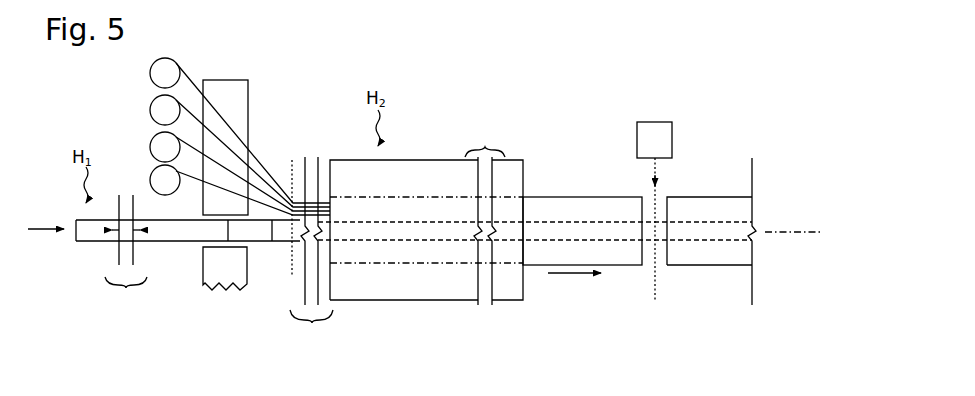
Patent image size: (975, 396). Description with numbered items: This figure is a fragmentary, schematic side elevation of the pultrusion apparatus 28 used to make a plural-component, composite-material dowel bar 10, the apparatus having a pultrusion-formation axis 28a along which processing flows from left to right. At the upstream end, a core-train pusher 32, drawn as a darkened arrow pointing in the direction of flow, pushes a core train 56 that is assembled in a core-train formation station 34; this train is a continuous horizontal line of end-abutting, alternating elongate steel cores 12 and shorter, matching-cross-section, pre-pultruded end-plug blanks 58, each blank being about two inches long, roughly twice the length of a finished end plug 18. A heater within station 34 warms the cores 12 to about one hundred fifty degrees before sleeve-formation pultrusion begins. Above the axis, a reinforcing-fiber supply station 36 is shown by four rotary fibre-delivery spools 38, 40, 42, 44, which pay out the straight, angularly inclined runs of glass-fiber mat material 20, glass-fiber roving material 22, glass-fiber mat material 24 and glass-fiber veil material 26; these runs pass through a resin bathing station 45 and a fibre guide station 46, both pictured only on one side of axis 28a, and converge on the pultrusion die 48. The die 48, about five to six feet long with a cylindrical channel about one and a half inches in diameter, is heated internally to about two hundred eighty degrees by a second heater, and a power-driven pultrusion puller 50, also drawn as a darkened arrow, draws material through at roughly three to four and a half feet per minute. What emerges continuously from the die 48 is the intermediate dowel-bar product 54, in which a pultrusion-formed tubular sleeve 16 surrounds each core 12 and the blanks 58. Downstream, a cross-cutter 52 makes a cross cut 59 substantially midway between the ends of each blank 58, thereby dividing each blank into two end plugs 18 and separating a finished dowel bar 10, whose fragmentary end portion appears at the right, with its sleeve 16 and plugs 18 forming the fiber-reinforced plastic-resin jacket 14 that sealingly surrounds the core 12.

The dowel bar 10 is at (763, 207).
The high-shear-strength core 12 is at (704, 217).
The fiber-reinforced plastic-resin jacket 14 is at (761, 256).
The cylindrically tubular sleeve 16 is at (742, 260).
The sleeve end plug 18 is at (681, 268).
The glass-fiber mat material 20 is at (196, 179).
The glass-fiber roving material 22 is at (199, 146).
The glass-fiber mat material 24 is at (199, 118).
The glass-fiber veil material 26 is at (196, 84).
The pultrusion apparatus 28 is at (490, 92).
The pultrusion-formation axis 28a is at (775, 231).
The core-train pusher 32 is at (34, 225).
The core-train formation station 34 is at (89, 246).
The reinforcing-fiber supply station 36 is at (190, 58).
The rotary fibre-delivery spool 38 is at (150, 183).
The rotary fibre-delivery spool 40 is at (150, 150).
The rotary fibre-delivery spool 42 is at (150, 114).
The rotary fibre-delivery spool 44 is at (150, 78).
The resin bathing station 45 is at (257, 80).
The fibre guide station 46 is at (289, 161).
The pultrusion die 48 is at (486, 149).
The pultrusion puller 50 is at (580, 276).
The cross-cutter 52 is at (670, 120).
The intermediate dowel-bar product 54 is at (549, 195).
The core train 56 is at (153, 248).
The end-plug blank 58 is at (447, 223).
The cross cut 59 is at (663, 195).